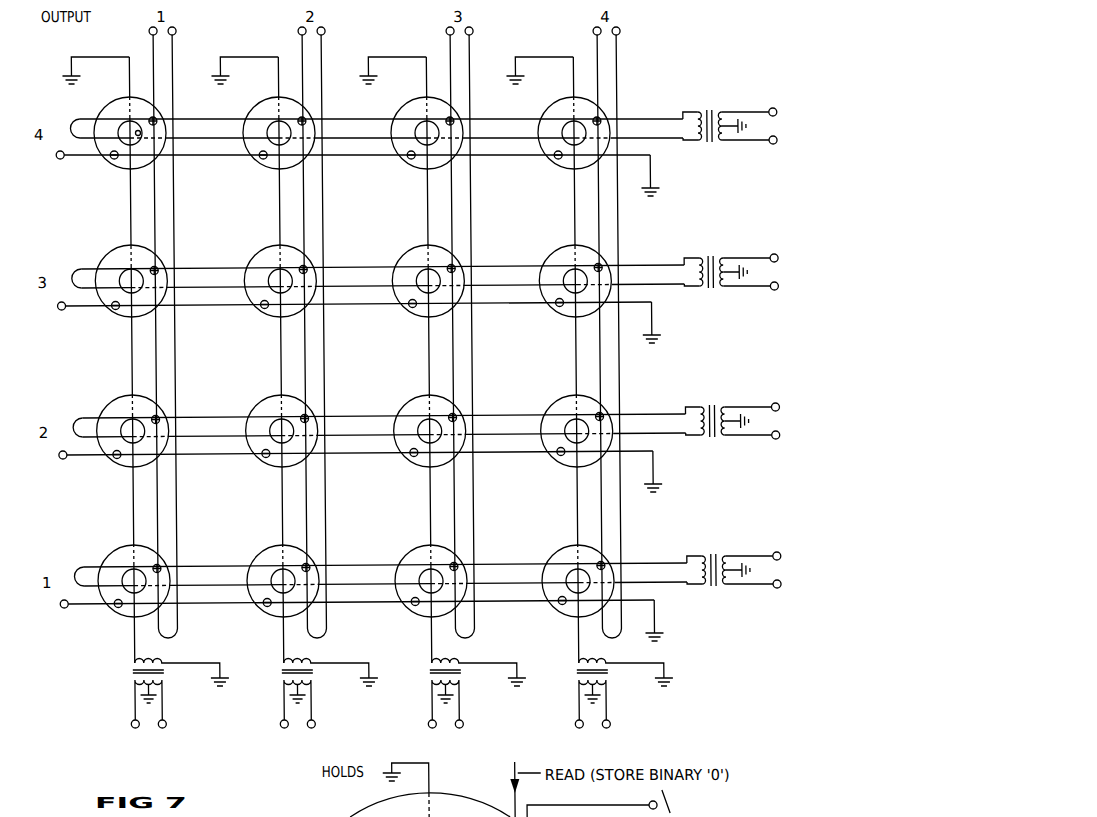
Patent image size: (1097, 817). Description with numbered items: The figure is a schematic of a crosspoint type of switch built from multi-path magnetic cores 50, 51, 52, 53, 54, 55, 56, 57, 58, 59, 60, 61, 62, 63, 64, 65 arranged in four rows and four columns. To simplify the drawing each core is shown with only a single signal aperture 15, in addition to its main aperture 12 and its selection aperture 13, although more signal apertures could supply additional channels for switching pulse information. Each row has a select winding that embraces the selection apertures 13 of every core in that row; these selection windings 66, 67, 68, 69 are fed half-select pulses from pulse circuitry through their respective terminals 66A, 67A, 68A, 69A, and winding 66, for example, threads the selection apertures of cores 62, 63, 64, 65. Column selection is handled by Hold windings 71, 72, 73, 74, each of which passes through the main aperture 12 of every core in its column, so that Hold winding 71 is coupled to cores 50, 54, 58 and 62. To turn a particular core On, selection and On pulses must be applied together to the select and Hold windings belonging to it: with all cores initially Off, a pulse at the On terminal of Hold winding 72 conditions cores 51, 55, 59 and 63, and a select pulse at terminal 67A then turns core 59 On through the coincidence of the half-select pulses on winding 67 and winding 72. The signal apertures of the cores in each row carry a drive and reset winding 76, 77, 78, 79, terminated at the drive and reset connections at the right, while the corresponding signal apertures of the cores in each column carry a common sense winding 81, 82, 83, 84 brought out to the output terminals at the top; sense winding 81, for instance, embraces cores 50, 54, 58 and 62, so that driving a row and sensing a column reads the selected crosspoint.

The main aperture 12 is at (140, 135).
The selection aperture 13 is at (114, 161).
The signal aperture 15 is at (158, 119).
The core 50 is at (116, 100).
The core 51 is at (265, 100).
The core 52 is at (413, 100).
The core 53 is at (560, 100).
The core 54 is at (116, 248).
The core 55 is at (265, 248).
The core 56 is at (413, 248).
The core 57 is at (560, 248).
The core 58 is at (116, 398).
The core 59 is at (265, 398).
The core 60 is at (413, 398).
The core 61 is at (560, 398).
The core 62 is at (116, 548).
The core 63 is at (265, 548).
The core 64 is at (413, 548).
The core 65 is at (560, 548).
The selection winding 66 is at (380, 603).
The selection winding 67 is at (371, 454).
The selection winding 68 is at (371, 305).
The selection winding 69 is at (371, 157).
The select winding terminal 66A is at (58, 608).
The select winding terminal 67A is at (55, 459).
The select winding terminal 68A is at (55, 310).
The select winding terminal 69A is at (55, 159).
The Hold winding 71 is at (129, 648).
The Hold winding 72 is at (278, 648).
The Hold winding 73 is at (426, 648).
The Hold winding 74 is at (573, 648).
The drive and reset winding 76 is at (633, 563).
The drive and reset winding 77 is at (633, 414).
The drive and reset winding 78 is at (633, 265).
The drive and reset winding 79 is at (633, 119).
The sense winding 81 is at (154, 49).
The sense winding 82 is at (303, 49).
The sense winding 83 is at (451, 49).
The sense winding 84 is at (598, 49).